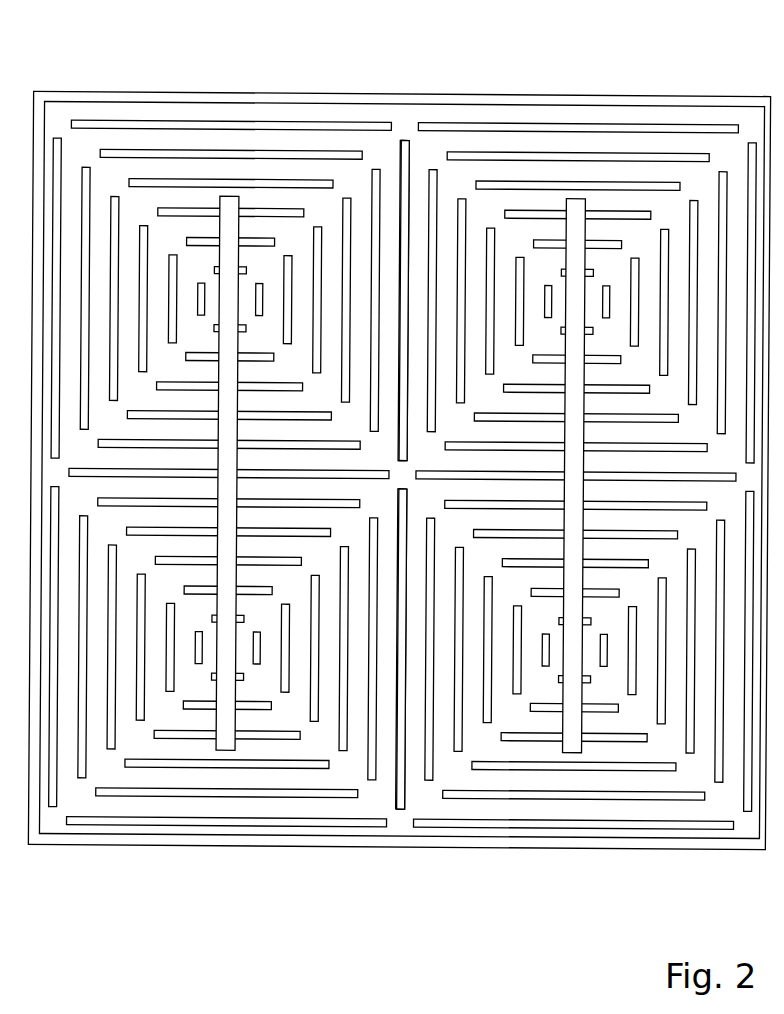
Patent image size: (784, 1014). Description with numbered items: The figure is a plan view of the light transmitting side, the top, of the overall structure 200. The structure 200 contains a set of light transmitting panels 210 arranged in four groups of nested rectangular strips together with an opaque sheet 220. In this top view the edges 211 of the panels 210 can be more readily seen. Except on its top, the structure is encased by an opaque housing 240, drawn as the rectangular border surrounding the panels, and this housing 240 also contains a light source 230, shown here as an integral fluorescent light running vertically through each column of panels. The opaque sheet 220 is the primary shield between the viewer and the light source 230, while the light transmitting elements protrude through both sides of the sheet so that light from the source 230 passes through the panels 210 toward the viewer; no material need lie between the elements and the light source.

The overall structure 200 is at (399, 432).
The light transmitting panels 210 is at (403, 427).
The edges of the panels 211 is at (233, 127).
The opaque sheet 220 is at (402, 122).
The light source 230 is at (578, 213).
The opaque housing 240 is at (487, 100).